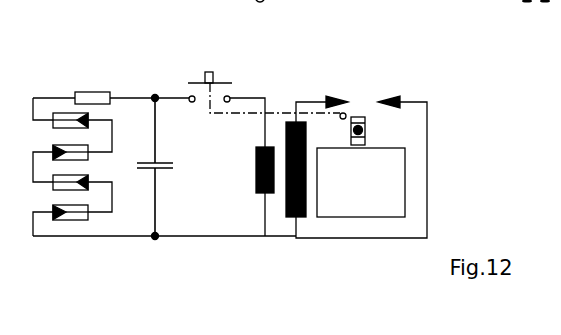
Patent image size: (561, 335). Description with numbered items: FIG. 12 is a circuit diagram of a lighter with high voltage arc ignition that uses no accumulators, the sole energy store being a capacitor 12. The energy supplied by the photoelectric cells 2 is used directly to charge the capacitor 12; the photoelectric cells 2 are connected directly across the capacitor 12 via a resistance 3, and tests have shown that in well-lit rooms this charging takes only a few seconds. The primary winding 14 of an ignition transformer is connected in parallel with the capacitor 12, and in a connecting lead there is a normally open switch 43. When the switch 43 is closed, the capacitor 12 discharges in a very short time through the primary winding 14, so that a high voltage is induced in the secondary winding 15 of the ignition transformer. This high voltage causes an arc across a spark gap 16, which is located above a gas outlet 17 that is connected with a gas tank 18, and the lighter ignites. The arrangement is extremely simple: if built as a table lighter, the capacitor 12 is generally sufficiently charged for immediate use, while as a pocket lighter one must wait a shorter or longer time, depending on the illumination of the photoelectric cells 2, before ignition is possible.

The photoelectric cells 2 is at (77, 152).
The resistance 3 is at (93, 92).
The capacitor 12 is at (164, 163).
The normally open switch 43 is at (228, 83).
The primary winding 14 is at (256, 169).
The secondary winding 15 is at (290, 218).
The spark gap 16 is at (370, 102).
The gas outlet 17 is at (358, 117).
The gas tank 18 is at (388, 180).